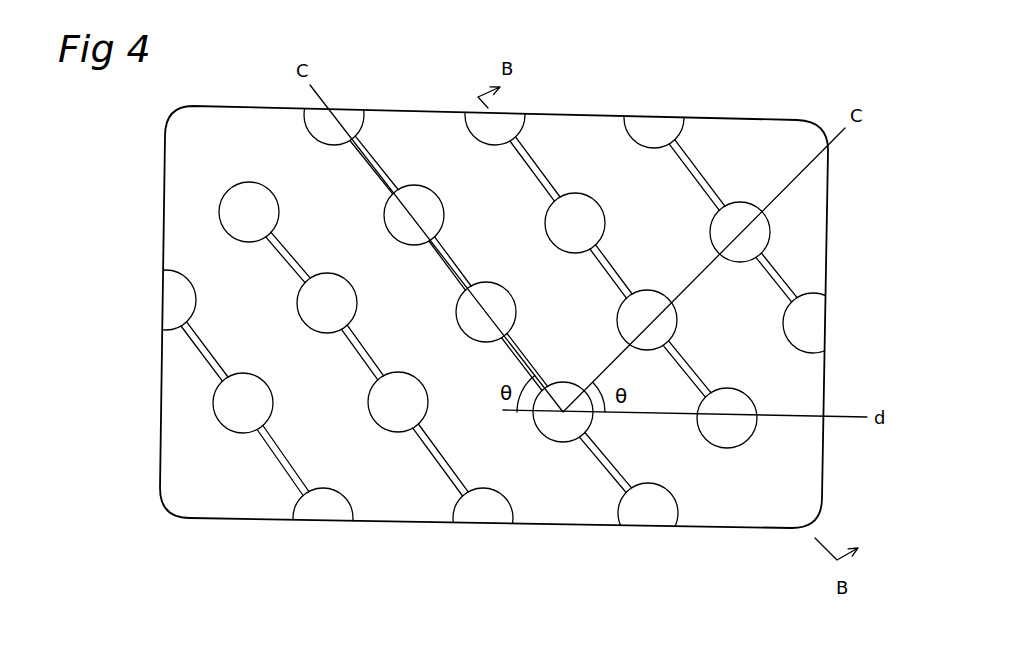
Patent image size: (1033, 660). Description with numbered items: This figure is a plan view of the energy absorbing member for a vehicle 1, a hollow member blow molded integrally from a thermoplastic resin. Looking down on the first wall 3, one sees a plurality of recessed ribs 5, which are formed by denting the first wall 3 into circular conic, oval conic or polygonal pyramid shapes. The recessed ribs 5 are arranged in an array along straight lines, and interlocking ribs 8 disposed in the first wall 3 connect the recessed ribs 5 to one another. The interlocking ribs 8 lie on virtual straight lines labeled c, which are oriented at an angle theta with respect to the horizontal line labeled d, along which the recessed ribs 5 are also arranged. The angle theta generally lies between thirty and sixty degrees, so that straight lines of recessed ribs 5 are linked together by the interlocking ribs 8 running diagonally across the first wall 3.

The energy absorbing member for a vehicle 1 is at (489, 303).
The first wall 3 is at (368, 478).
The recessed ribs 5 is at (573, 227).
The interlocking ribs 8 is at (698, 173).